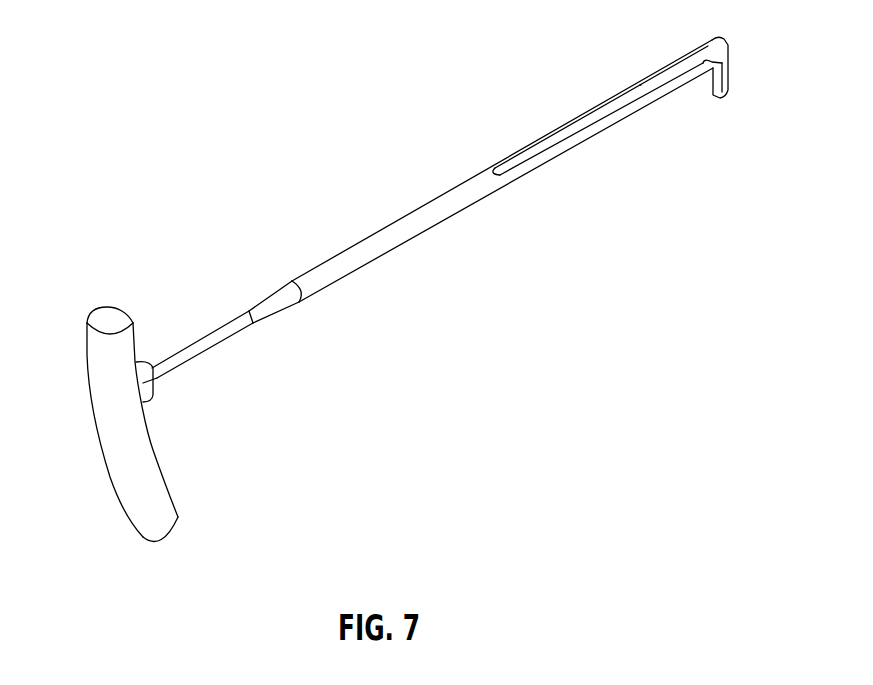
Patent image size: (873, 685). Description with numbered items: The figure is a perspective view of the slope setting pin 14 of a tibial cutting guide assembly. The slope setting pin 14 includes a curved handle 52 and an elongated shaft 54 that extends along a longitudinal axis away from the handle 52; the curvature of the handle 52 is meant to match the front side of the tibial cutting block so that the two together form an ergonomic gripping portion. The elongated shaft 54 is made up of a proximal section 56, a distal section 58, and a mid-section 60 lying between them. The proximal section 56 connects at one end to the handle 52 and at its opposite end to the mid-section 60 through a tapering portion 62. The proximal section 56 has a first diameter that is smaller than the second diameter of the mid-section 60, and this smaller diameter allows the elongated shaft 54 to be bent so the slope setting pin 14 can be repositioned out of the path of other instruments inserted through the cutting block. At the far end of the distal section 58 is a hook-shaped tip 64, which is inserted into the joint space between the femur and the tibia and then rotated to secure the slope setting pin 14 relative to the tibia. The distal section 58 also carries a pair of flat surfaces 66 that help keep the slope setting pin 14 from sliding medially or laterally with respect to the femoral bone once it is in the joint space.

The slope setting pin 14 is at (216, 52).
The handle 52 is at (103, 431).
The elongated shaft 54 is at (546, 184).
The proximal section 56 is at (208, 349).
The distal section 58 is at (583, 131).
The mid-section 60 is at (364, 265).
The tapering portion 62 is at (277, 293).
The hook-shaped tip 64 is at (729, 66).
The flat surfaces 66 is at (640, 85).